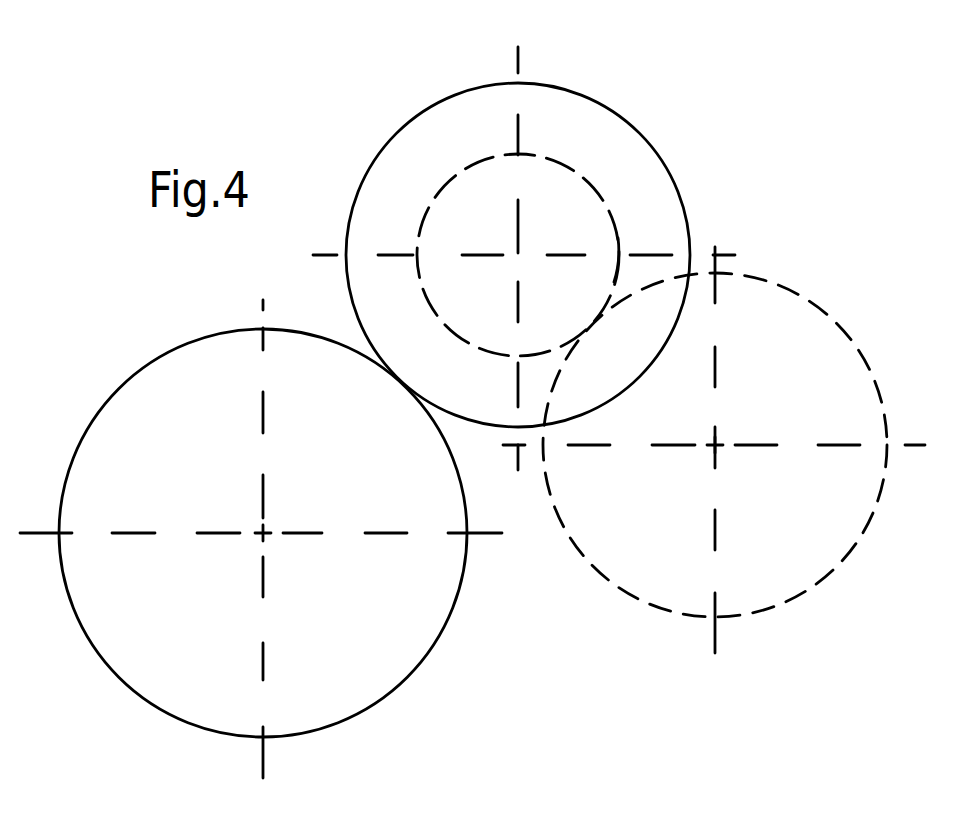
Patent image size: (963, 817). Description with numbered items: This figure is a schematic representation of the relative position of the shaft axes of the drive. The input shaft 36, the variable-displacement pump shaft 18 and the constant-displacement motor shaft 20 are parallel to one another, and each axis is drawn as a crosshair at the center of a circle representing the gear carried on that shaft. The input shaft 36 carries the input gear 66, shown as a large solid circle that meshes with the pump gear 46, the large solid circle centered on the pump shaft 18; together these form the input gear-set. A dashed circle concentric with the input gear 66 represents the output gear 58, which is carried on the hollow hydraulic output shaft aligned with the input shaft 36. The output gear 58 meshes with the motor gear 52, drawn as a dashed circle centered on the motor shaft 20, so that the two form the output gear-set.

The variable-displacement pump shaft 18 is at (262, 533).
The constant-displacement motor shaft 20 is at (714, 446).
The input shaft 36 is at (519, 254).
The pump gear 46 is at (422, 657).
The motor gear 52 is at (812, 300).
The output gear 58 is at (620, 235).
The input gear 66 is at (598, 99).